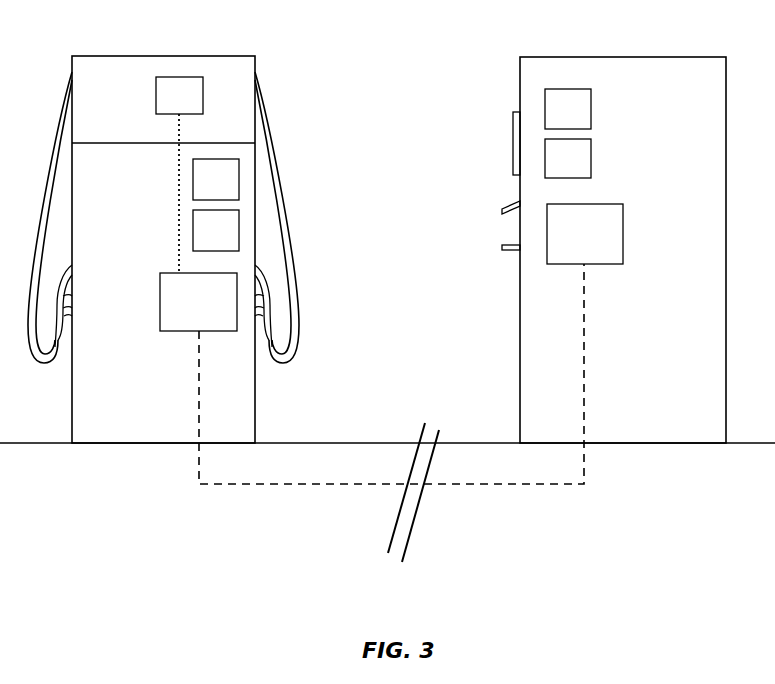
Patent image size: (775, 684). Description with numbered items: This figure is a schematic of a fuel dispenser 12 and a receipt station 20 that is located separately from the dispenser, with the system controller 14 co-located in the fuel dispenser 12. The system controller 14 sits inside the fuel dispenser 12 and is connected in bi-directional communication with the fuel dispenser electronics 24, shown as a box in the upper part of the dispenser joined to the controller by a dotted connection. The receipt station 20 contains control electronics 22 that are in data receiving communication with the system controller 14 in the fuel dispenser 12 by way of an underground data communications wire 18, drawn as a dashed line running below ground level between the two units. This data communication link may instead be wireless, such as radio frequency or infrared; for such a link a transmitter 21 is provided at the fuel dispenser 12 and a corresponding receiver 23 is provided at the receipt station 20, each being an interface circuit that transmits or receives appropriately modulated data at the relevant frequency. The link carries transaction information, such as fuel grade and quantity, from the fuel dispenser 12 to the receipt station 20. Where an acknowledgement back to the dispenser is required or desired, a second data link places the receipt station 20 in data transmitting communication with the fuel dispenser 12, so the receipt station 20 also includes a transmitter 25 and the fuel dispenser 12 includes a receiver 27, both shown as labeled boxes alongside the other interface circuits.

The fuel dispenser 12 is at (196, 56).
The system controller 14 is at (183, 333).
The underground data communications wire 18 is at (485, 486).
The receipt station 20 is at (520, 90).
The transmitter 21 is at (240, 168).
The control electronics 22 is at (608, 204).
The receiver 23 is at (591, 147).
The fuel dispenser electronics 24 is at (156, 100).
The transmitter 25 is at (591, 98).
The receiver 27 is at (240, 218).